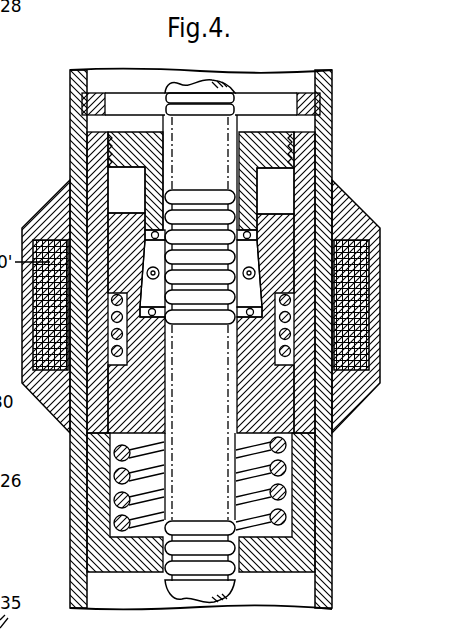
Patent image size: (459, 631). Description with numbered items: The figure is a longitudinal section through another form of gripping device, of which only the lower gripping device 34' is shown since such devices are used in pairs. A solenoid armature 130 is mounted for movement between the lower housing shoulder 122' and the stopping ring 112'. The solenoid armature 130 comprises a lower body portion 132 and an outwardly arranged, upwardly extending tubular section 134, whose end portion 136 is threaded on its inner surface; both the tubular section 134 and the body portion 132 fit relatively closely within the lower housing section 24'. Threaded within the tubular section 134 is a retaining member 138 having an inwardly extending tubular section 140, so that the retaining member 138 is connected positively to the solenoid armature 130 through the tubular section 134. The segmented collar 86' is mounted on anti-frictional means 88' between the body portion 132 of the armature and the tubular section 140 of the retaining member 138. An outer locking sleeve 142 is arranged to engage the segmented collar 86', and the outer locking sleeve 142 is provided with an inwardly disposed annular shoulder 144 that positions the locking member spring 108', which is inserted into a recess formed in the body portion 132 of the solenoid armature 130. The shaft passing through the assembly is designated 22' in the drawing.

The retaining member 138 is at (137, 143).
The lower gripping device 34' is at (201, 112).
The stopping ring 112' is at (340, 339).
The end portion 136 is at (290, 152).
The tubular section 134 is at (302, 176).
The lower housing section 24' is at (62, 339).
The tubular section 140 is at (157, 183).
The drive shaft 22' is at (176, 341).
The outer locking sleeve 142 is at (273, 227).
The anti-frictional means 88' is at (201, 273).
The segmented collar 86' is at (201, 295).
The annular shoulder 144 is at (260, 307).
The locking member spring 108' is at (202, 323).
The body portion 132 is at (248, 398).
The solenoid armature 130 is at (70, 433).
The lower housing shoulder 122' is at (304, 502).